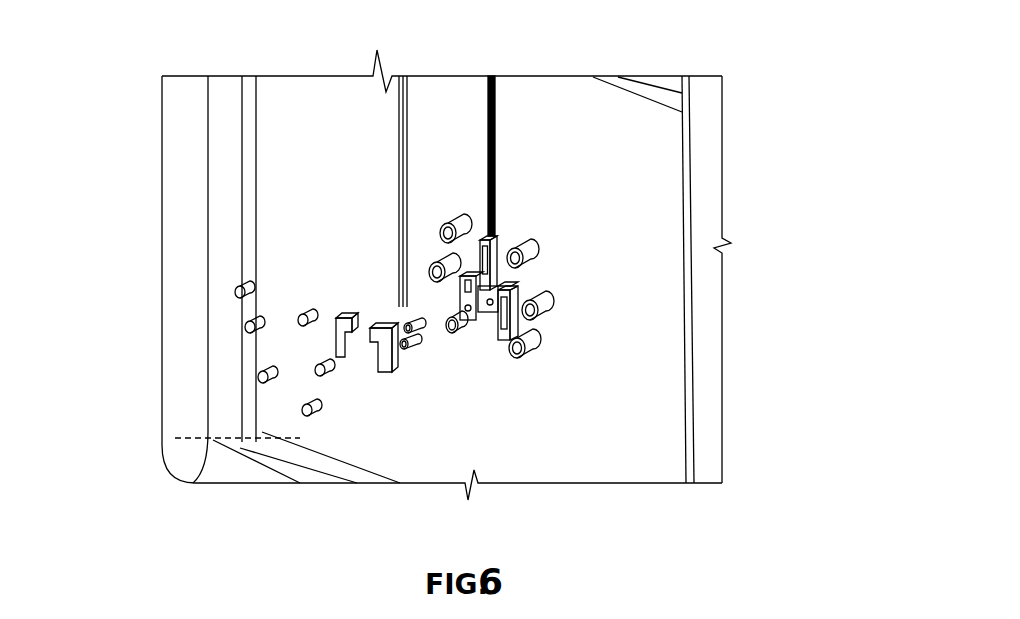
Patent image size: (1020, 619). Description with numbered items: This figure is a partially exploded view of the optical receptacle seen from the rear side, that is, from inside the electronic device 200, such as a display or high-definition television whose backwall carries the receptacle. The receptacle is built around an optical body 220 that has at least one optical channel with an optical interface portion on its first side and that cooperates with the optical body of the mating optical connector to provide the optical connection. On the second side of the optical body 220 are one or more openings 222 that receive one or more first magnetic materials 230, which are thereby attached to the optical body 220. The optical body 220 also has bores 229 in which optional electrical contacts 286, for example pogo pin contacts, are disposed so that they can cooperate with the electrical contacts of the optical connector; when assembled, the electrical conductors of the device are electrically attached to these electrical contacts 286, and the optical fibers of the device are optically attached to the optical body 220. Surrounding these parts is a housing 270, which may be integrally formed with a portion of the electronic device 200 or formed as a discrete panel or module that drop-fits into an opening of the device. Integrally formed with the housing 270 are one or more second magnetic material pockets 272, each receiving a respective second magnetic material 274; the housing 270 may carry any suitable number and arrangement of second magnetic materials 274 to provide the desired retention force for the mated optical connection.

The electronic device 200 is at (288, 152).
The housing 270 is at (602, 355).
The second magnetic material pockets 272 is at (462, 230).
The second magnetic materials 274 is at (256, 324).
The optical body 220 is at (487, 318).
The openings 222 is at (470, 299).
The bores 229 is at (488, 332).
The electrical contacts 286 is at (426, 335).
The first magnetic materials 230 is at (398, 361).